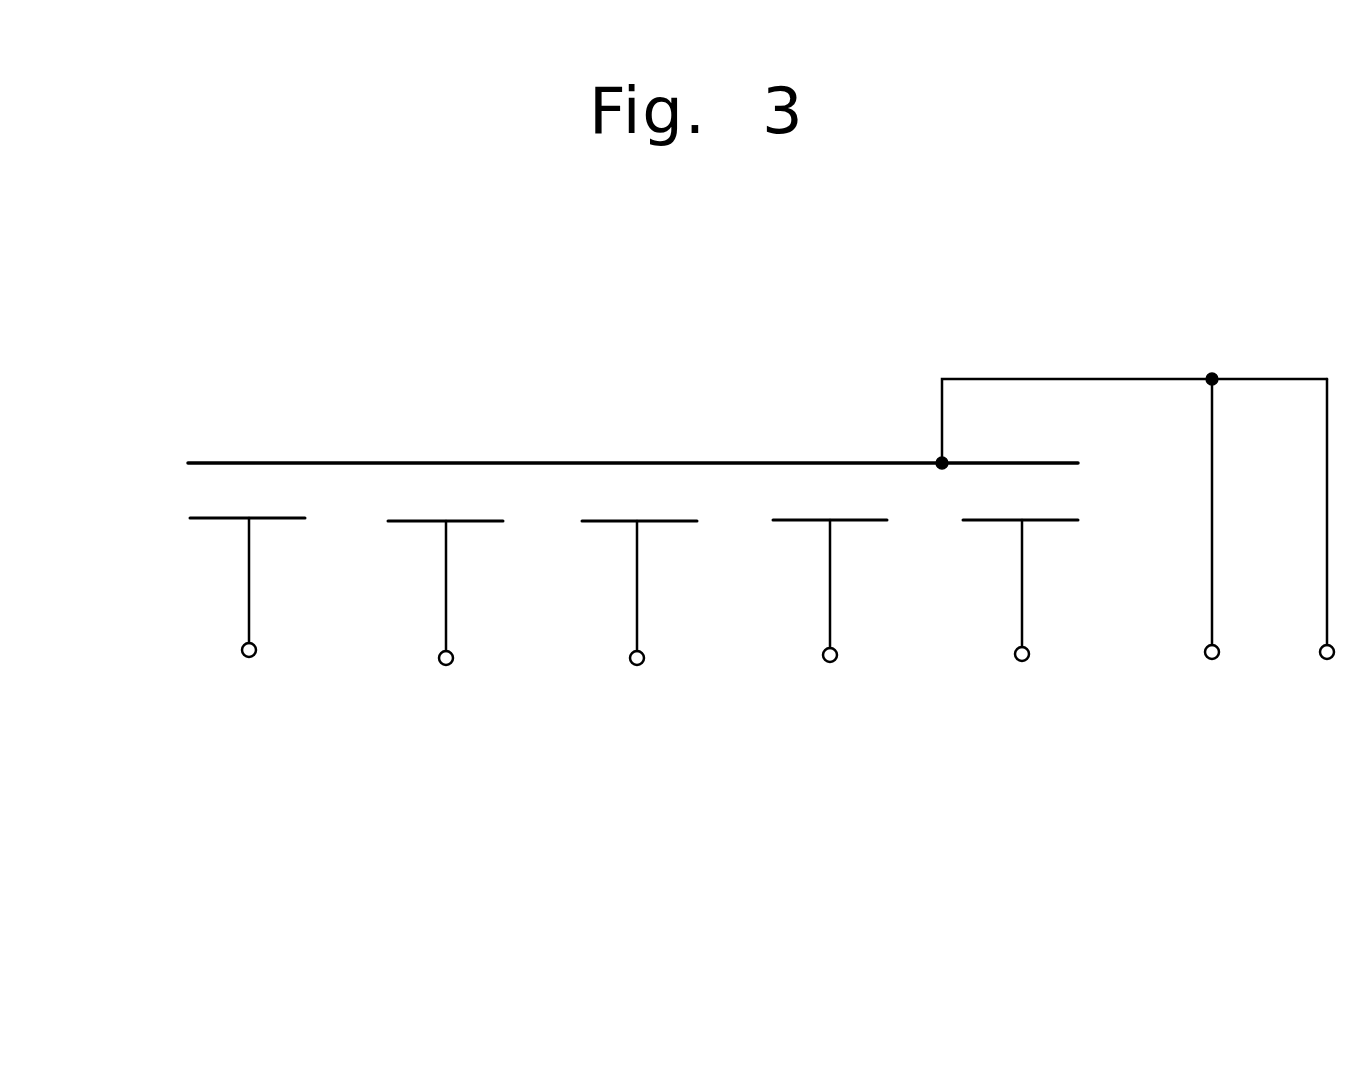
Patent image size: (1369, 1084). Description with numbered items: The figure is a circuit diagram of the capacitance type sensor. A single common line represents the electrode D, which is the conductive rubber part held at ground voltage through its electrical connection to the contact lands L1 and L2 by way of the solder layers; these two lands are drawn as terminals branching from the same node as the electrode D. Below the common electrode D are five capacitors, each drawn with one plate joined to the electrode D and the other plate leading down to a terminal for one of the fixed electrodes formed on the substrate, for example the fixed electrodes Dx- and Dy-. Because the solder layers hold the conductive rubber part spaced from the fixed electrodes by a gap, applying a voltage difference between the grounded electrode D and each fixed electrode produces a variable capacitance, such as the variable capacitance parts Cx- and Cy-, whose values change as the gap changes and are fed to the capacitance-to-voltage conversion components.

The electrode D is at (265, 462).
The variable capacitance part Cx- is at (415, 495).
The variable capacitance part Cy- is at (815, 490).
The fixed electrode Dx- is at (518, 532).
The fixed electrode Dy- is at (901, 532).
The contact land L1 is at (1205, 552).
The contact land L2 is at (1330, 552).